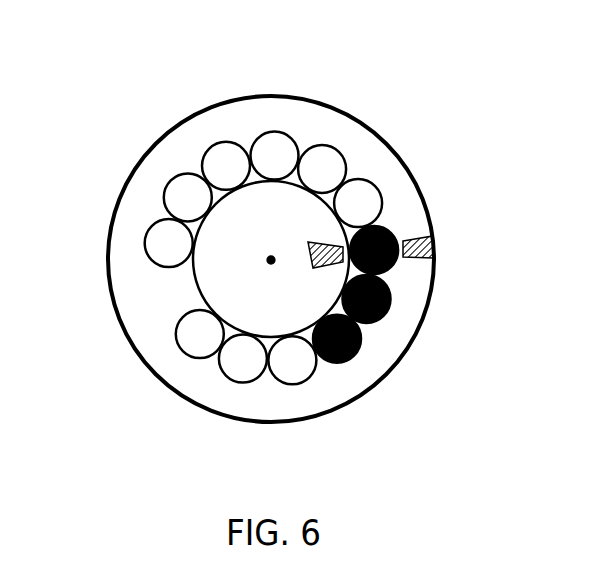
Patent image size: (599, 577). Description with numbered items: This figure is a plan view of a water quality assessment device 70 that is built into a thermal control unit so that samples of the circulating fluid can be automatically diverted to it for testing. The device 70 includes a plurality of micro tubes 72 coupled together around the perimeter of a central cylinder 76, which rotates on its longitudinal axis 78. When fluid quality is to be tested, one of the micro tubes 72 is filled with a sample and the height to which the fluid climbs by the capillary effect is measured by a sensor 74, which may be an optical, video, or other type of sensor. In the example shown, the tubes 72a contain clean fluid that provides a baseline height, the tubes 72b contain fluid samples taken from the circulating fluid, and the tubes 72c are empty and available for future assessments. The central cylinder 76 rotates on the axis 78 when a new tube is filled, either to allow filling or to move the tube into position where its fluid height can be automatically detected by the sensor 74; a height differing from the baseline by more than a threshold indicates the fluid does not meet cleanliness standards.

The water quality assessment device 70 is at (323, 80).
The micro tubes 72 is at (332, 162).
The tubes containing clean fluid 72a is at (285, 140).
The tubes containing fluid samples 72b is at (387, 228).
The empty tubes 72c is at (208, 160).
The sensor 74 is at (306, 263).
The central cylinder 76 is at (237, 203).
The longitudinal axis 78 is at (274, 253).